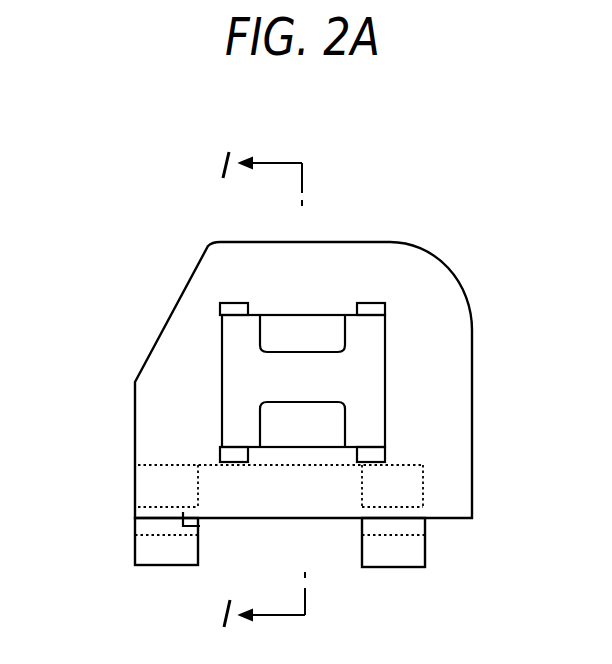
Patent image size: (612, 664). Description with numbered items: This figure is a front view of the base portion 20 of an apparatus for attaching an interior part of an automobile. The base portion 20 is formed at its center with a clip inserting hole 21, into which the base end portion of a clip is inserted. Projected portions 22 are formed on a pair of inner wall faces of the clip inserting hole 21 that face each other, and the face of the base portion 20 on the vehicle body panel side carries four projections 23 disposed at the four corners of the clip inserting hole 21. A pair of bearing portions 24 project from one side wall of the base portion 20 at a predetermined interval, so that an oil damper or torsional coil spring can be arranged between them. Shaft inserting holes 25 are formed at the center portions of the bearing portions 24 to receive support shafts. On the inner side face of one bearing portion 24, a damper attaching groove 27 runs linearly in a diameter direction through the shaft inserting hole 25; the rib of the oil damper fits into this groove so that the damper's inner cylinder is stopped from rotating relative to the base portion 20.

The base portion 20 is at (467, 229).
The clip inserting hole 21 is at (360, 380).
The projected portions 22 is at (317, 352).
The projections 23 is at (240, 302).
The bearing portions 24 is at (152, 565).
The shaft inserting holes 25 is at (165, 535).
The damper attaching groove 27 is at (200, 523).